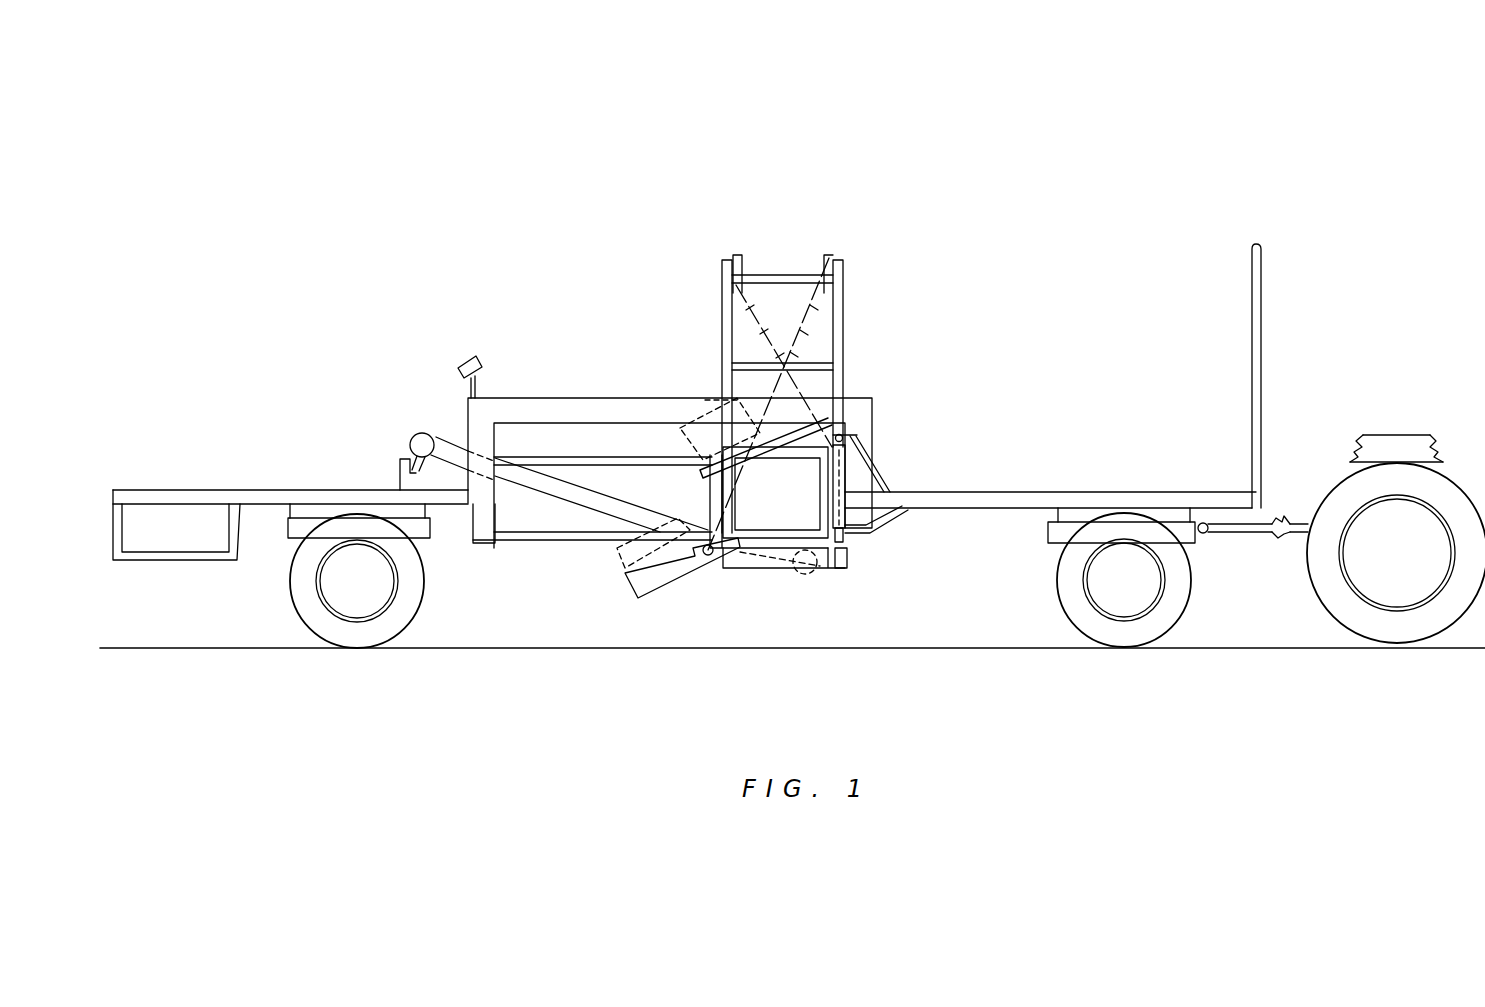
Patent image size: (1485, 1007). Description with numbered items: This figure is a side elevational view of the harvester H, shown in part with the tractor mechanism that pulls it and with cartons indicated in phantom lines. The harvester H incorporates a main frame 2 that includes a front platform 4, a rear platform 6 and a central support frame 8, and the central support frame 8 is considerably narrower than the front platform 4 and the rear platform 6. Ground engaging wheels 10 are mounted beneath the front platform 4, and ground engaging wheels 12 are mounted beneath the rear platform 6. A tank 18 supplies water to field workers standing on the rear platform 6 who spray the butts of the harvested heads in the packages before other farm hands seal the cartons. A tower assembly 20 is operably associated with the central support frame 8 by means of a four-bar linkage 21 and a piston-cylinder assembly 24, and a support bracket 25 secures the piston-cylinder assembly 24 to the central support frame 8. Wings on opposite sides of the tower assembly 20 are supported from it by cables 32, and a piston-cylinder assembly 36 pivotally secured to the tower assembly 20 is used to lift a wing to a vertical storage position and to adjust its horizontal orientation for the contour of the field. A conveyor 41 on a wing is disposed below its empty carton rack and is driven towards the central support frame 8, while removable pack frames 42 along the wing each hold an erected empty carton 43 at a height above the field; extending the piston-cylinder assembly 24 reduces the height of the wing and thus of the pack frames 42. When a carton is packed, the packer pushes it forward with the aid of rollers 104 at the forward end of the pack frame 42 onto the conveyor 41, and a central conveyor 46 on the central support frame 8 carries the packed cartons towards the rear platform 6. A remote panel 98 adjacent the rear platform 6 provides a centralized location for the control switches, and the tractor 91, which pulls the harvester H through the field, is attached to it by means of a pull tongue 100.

The harvester H is at (1080, 266).
The main frame 2 is at (898, 420).
The front platform 4 is at (1078, 492).
The rear platform 6 is at (242, 490).
The central support frame 8 is at (577, 396).
The ground engaging wheels 10 is at (1165, 609).
The ground engaging wheels 12 is at (306, 600).
The tank 18 is at (160, 525).
The tower assembly 20 is at (847, 324).
The four-bar linkage 21 is at (602, 456).
The piston-cylinder assembly 24 is at (852, 512).
The support bracket 25 is at (853, 467).
The cables 32 is at (800, 386).
The piston-cylinder assembly 36 is at (742, 262).
The conveyor 41 is at (772, 536).
The pack frames 42 is at (660, 586).
The erected empty carton 43 is at (705, 400).
The central conveyor 46 is at (440, 438).
The tractor 91 is at (1396, 456).
The remote panel 98 is at (468, 356).
The pull tongue 100 is at (1238, 532).
The rollers 104 is at (712, 562).